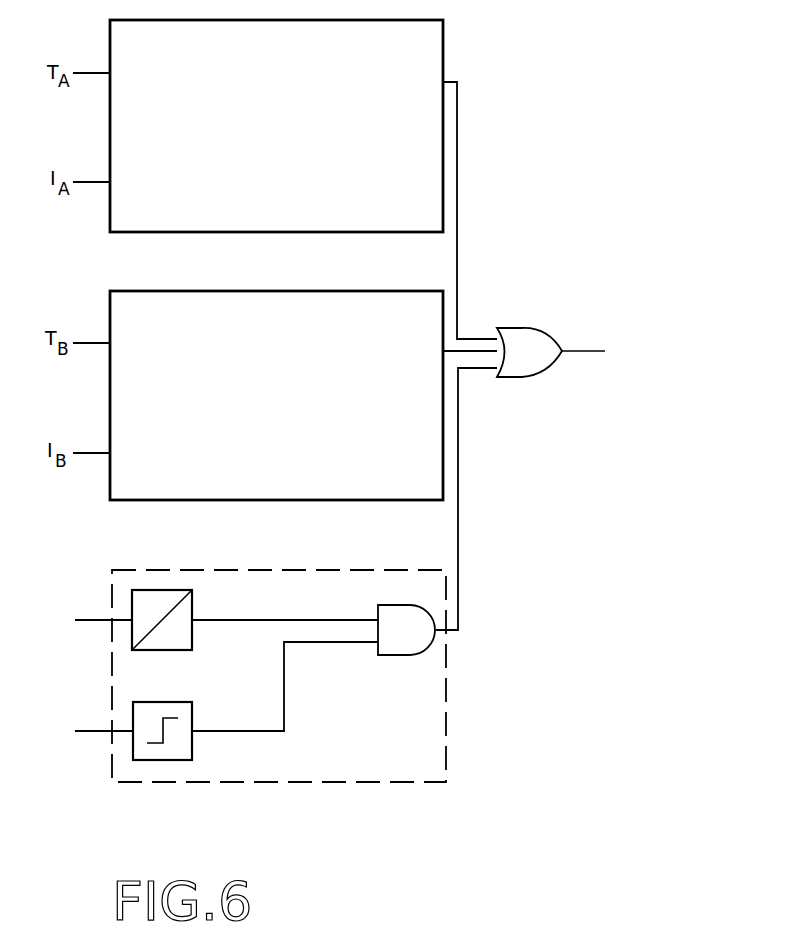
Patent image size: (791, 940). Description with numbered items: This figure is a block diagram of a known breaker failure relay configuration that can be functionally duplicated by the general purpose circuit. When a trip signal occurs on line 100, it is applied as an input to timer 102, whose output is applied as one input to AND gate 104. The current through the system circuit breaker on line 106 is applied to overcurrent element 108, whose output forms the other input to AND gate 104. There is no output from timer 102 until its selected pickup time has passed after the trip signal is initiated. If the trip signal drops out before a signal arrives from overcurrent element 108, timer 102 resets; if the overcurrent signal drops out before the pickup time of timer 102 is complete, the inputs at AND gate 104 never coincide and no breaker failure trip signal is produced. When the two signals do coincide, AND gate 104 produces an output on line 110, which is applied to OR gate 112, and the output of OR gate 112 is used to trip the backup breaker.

The line 100 is at (95, 621).
The timer 102 is at (192, 637).
The AND gate 104 is at (405, 655).
The line 106 is at (95, 732).
The overcurrent element 108 is at (192, 738).
The line 110 is at (458, 545).
The OR gate 112 is at (530, 377).